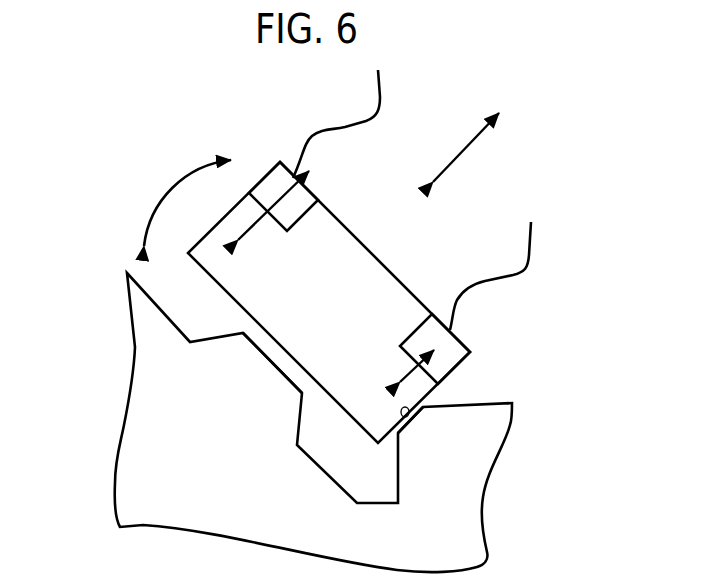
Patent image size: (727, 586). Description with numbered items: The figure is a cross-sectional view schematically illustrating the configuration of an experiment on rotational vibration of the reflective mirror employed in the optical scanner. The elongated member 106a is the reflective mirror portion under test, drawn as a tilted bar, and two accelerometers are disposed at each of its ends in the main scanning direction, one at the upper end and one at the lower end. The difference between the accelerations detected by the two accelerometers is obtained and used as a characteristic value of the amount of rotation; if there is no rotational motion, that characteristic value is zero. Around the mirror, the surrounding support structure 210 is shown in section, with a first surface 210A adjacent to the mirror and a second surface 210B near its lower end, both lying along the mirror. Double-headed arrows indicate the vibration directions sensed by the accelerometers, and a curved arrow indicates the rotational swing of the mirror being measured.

The housing body 210 is at (135, 348).
The first inclined surface of housing 210A is at (282, 363).
The second surface of housing 210B is at (408, 415).
The arm / lever member 106a is at (223, 273).